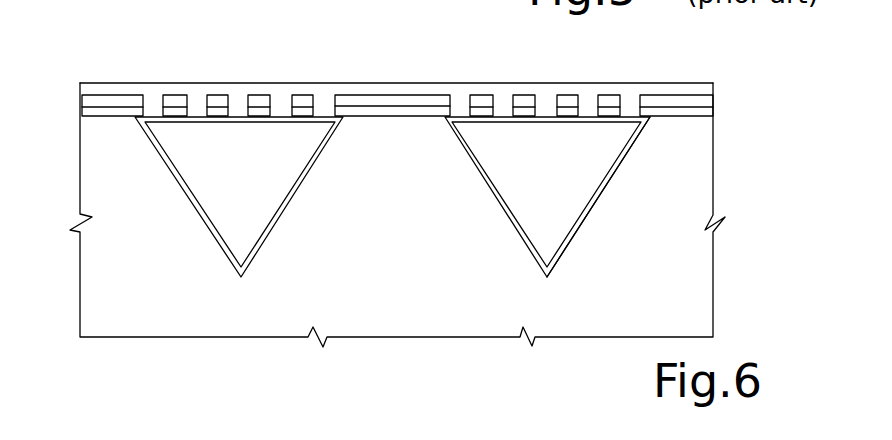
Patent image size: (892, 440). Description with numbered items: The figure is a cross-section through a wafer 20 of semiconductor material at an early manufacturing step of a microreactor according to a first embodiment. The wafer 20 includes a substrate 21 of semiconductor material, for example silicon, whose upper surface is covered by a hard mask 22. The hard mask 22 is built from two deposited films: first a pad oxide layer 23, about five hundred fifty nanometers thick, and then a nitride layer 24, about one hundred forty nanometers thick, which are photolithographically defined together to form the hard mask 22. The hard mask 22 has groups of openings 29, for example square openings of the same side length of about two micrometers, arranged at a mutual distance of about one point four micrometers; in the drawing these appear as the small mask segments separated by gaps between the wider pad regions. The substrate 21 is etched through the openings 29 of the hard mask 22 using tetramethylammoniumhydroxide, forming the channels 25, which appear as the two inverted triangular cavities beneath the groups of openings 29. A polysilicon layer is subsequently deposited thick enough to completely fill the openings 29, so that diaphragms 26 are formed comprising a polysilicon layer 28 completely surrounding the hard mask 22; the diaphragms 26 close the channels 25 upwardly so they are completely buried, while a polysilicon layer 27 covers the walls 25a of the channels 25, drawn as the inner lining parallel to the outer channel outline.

The wafer 20 is at (407, 173).
The substrate 21 is at (113, 320).
The hard mask 22 is at (178, 89).
The pad oxide layer 23 is at (95, 110).
The nitride layer 24 is at (111, 102).
The channels 25 is at (256, 214).
The walls of the channels 25a is at (574, 243).
The diaphragms 26 is at (269, 80).
The polysilicon layer 27 is at (305, 179).
The polysilicon layer 28 is at (323, 102).
The openings 29 is at (155, 96).